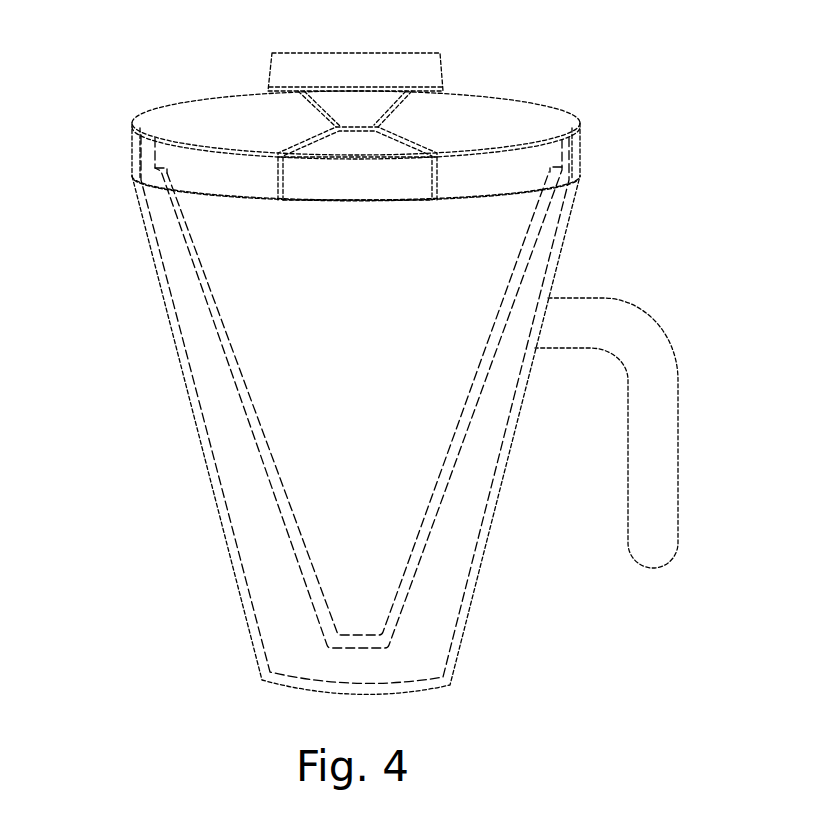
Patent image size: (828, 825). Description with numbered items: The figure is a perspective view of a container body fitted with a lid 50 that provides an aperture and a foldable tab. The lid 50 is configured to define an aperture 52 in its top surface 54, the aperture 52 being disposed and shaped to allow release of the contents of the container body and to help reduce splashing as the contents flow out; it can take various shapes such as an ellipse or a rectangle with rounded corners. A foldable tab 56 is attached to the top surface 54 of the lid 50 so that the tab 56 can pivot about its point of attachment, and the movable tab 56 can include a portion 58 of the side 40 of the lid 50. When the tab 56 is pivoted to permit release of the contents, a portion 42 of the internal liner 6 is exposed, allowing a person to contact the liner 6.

The internal liner 6 is at (538, 242).
The side of the lid 40 is at (132, 152).
The portion of the internal liner 42 is at (363, 172).
The lid 50 is at (537, 122).
The aperture 52 is at (370, 148).
The top surface of the lid 54 is at (336, 125).
The foldable tab 56 is at (382, 131).
The portion of the side of the lid 58 is at (372, 62).